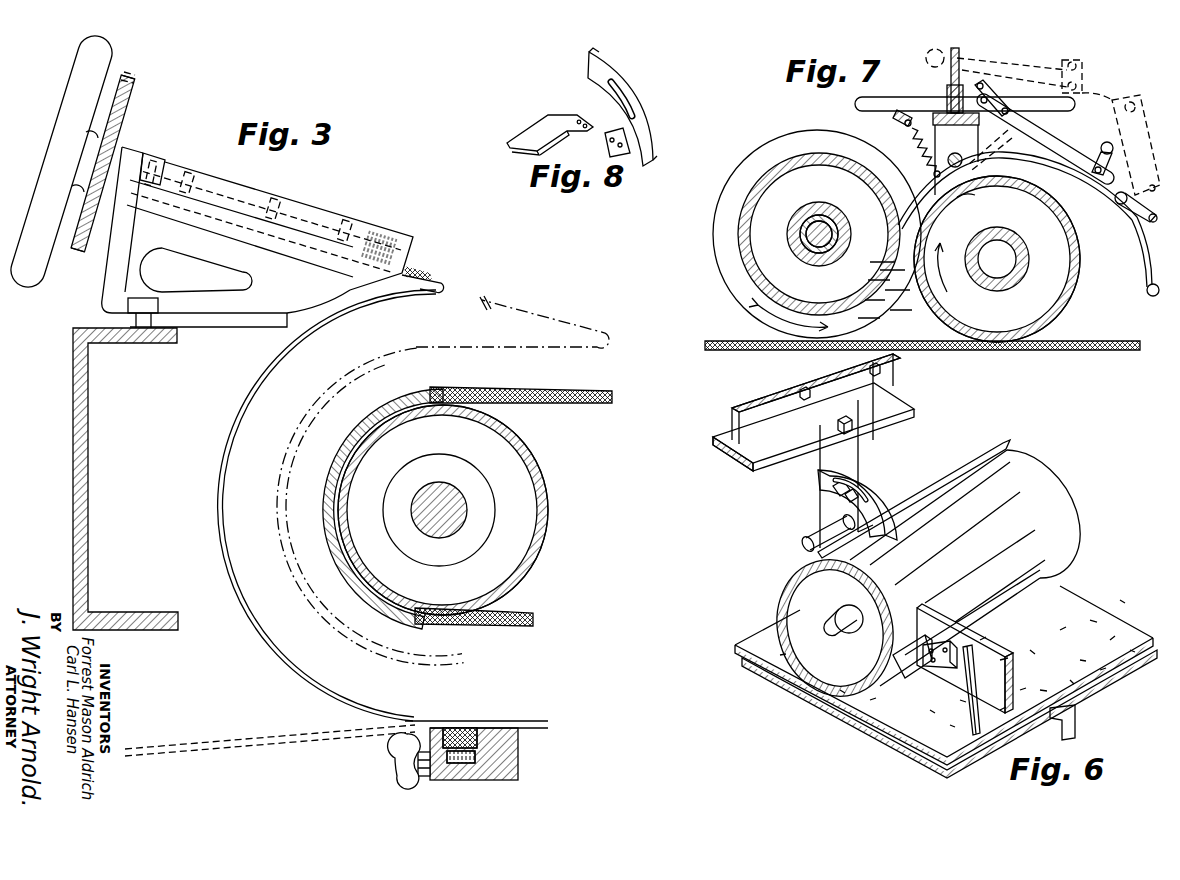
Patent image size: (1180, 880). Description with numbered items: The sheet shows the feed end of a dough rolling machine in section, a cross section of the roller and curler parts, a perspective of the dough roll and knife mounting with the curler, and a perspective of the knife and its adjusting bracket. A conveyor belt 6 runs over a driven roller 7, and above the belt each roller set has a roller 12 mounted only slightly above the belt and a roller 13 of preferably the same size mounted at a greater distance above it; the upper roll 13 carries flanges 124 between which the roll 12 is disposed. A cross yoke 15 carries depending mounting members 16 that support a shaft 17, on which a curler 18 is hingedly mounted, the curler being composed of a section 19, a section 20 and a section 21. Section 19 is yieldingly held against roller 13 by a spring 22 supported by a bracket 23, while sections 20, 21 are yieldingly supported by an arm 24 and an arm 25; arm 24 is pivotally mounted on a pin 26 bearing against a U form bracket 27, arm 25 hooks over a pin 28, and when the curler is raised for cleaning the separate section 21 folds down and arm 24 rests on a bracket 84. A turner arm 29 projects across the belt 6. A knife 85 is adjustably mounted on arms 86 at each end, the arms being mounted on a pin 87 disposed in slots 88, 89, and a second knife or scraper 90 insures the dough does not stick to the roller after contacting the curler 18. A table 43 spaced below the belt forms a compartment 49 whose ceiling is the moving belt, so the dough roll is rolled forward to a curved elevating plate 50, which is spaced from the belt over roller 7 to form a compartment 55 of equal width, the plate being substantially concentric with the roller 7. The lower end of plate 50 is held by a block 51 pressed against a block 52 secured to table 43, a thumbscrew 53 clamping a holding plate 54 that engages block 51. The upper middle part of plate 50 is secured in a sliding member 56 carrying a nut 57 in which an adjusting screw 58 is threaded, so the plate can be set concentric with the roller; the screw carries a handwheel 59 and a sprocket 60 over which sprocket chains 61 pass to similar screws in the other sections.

In FIG. 3, the conveyor belt 6 is at (567, 404).
In FIG. 7, the conveyor belt 6 is at (1110, 346).
In FIG. 6, the conveyor belt 6 is at (1100, 618).
In FIG. 3, the roller 7 is at (522, 497).
In FIG. 7, the roller 12 is at (1052, 278).
In FIG. 6, the roller 12 is at (1050, 515).
In FIG. 7, the roller 13 is at (772, 183).
In FIG. 7, the flanges 124 is at (730, 272).
In FIG. 6, the cross yoke 15 is at (750, 455).
In FIG. 7, the mounting members 16 is at (957, 197).
In FIG. 6, the mounting members 16 is at (822, 452).
In FIG. 7, the shaft 17 is at (956, 152).
In FIG. 6, the shaft 17 is at (806, 530).
In FIG. 7, the curler 18 is at (1012, 160).
In FIG. 7, the section 19 is at (922, 212).
In FIG. 7, the section 20 is at (1035, 155).
In FIG. 7, the section 21 is at (1115, 108).
In FIG. 7, the spring 22 is at (913, 140).
In FIG. 7, the bracket 23 is at (912, 122).
In FIG. 7, the arm 24 is at (982, 62).
In FIG. 7, the arm 25 is at (1118, 207).
In FIG. 7, the pin 26 is at (995, 85).
In FIG. 7, the U form bracket 27 is at (993, 140).
In FIG. 7, the pin 28 is at (1076, 58).
In FIG. 6, the turner arm 29 is at (978, 690).
In FIG. 3, the table 43 is at (540, 721).
In FIG. 3, the compartment 49 is at (528, 690).
In FIG. 3, the curved elevating plate 50 is at (225, 498).
In FIG. 3, the block 51 is at (446, 728).
In FIG. 3, the block 52 is at (518, 776).
In FIG. 3, the thumbscrew 53 is at (398, 782).
In FIG. 3, the holding plate 54 is at (432, 781).
In FIG. 3, the compartment 55 is at (247, 578).
In FIG. 3, the sliding member 56 is at (414, 268).
In FIG. 3, the nut 57 is at (346, 228).
In FIG. 3, the adjusting screw 58 is at (161, 168).
In FIG. 3, the handwheel 59 is at (60, 101).
In FIG. 3, the sprocket 60 is at (129, 113).
In FIG. 3, the sprocket chains 61 is at (134, 83).
In FIG. 7, the bracket 84 is at (951, 80).
In FIG. 8, the knife 85 is at (540, 131).
In FIG. 6, the knife 85 is at (818, 552).
In FIG. 8, the arms 86 is at (645, 130).
In FIG. 6, the arms 86 is at (818, 495).
In FIG. 6, the pin 87 is at (830, 485).
In FIG. 6, the slot 88 is at (841, 480).
In FIG. 6, the slot 89 is at (858, 475).
In FIG. 6, the second knife or scraper 90 is at (912, 655).